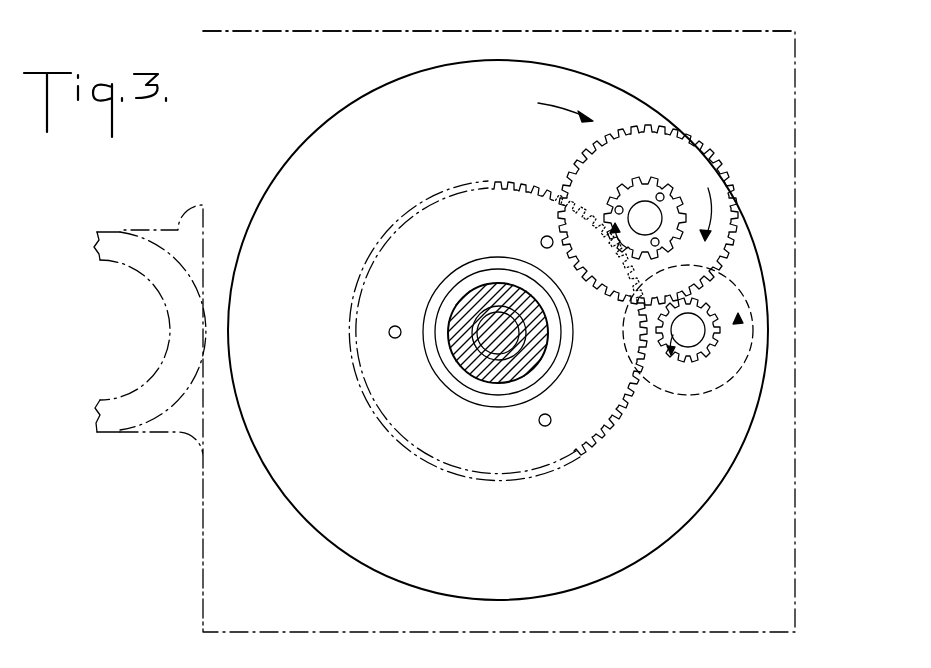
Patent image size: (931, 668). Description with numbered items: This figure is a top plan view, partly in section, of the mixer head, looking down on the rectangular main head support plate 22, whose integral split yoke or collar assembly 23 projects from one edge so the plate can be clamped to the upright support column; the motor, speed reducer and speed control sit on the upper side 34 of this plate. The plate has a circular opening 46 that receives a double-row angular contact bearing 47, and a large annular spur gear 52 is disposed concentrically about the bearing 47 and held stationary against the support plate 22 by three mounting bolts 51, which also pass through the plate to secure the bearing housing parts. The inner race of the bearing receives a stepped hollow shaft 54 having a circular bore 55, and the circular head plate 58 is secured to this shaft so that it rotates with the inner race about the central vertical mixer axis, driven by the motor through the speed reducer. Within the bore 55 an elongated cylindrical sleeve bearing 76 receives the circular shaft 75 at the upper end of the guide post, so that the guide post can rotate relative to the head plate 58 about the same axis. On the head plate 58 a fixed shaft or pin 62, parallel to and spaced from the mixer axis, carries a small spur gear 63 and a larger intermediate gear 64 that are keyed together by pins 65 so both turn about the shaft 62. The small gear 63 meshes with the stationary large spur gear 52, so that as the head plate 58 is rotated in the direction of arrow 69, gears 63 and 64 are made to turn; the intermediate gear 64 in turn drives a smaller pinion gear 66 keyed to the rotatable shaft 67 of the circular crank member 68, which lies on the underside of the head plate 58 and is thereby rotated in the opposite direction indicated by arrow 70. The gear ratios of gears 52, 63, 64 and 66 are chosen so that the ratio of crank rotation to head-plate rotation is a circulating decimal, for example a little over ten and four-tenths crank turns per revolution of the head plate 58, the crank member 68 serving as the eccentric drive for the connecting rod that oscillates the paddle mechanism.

The main head support plate 22 is at (785, 552).
The split yoke or collar assembly 23 is at (118, 230).
The upper side 34 is at (342, 42).
The circular opening 46 is at (553, 375).
The double-row angular contact bearing 47 is at (461, 386).
The bolts 51 is at (389, 332).
The large annular spur gear 52 is at (603, 408).
The stepped shaft 54 is at (470, 352).
The circular bore 55 is at (490, 362).
The circular head plate 58 is at (679, 517).
The fixed shaft or pin 62 is at (641, 206).
The small spur gear 63 is at (628, 192).
The intermediate gear 64 is at (722, 223).
The pins 65 is at (664, 194).
The pinion gear 66 is at (688, 362).
The rotatable shaft 67 is at (690, 318).
The circular crank member 68 is at (725, 385).
The arrow 69 is at (578, 83).
The arrow 70 is at (742, 336).
The circular shaft 75 is at (490, 338).
The cylindrical sleeve bearing 76 is at (483, 316).